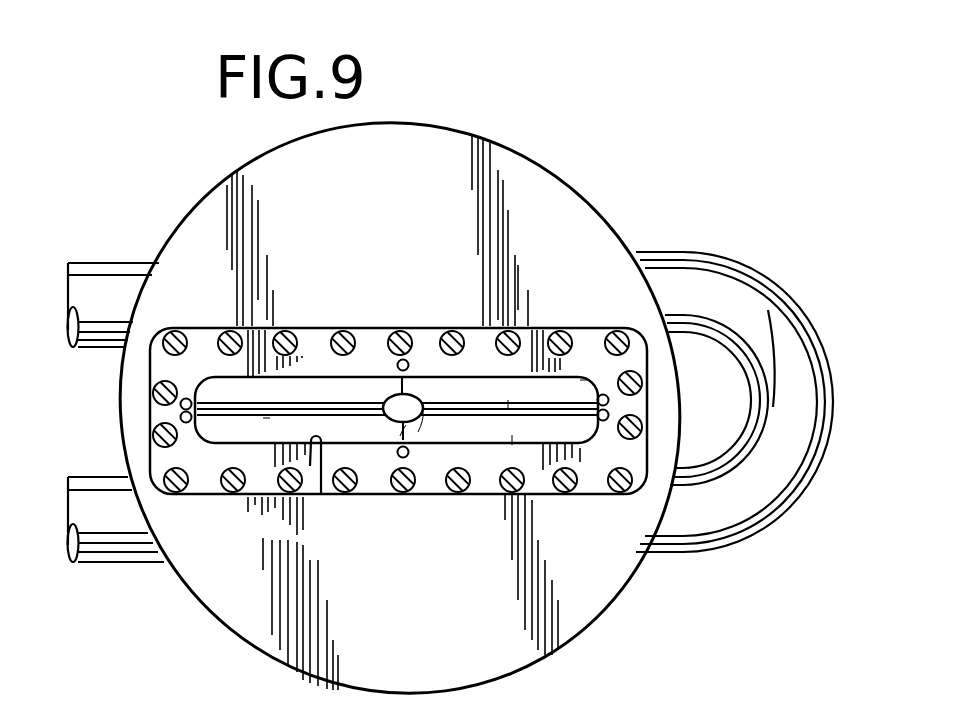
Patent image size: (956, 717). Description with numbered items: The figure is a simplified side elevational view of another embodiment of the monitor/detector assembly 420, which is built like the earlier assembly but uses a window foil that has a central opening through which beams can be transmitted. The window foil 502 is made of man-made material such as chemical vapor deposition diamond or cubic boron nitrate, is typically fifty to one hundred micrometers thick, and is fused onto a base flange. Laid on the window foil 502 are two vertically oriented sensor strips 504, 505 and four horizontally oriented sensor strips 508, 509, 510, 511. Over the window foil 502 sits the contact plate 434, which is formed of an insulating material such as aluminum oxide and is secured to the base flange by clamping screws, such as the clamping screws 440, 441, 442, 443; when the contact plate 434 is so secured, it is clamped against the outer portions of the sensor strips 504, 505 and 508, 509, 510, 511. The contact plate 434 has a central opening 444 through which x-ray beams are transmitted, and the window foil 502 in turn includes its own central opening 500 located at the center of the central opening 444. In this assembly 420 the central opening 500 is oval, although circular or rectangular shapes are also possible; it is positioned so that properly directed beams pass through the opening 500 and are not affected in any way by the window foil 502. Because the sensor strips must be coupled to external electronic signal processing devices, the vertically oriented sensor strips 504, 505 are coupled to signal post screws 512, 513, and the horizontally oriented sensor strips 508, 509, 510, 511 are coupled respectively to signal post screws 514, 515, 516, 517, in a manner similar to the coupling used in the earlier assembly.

The monitor/detector assembly 420 is at (697, 594).
The contact plate 434 is at (203, 462).
The clamping screw 440 is at (410, 338).
The clamping screw 441 is at (157, 384).
The clamping screw 442 is at (153, 428).
The clamping screw 443 is at (401, 458).
The central opening 444 is at (321, 494).
The central opening 500 is at (388, 396).
The window foil 502 is at (580, 380).
The vertically oriented sensor strip 504 is at (415, 393).
The vertically oriented sensor strip 505 is at (418, 432).
The horizontally oriented sensor strip 508 is at (250, 408).
The horizontally oriented sensor strip 509 is at (266, 418).
The horizontally oriented sensor strip 510 is at (508, 400).
The horizontally oriented sensor strip 511 is at (512, 445).
The signal post screw 512 is at (399, 361).
The signal post screw 513 is at (406, 425).
The signal post screw 514 is at (180, 404).
The signal post screw 515 is at (182, 422).
The signal post screw 516 is at (607, 398).
The signal post screw 517 is at (609, 412).